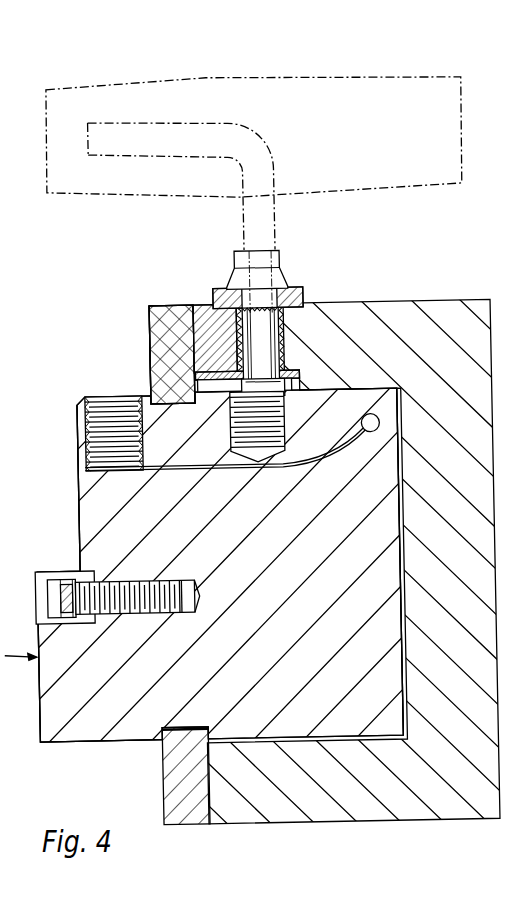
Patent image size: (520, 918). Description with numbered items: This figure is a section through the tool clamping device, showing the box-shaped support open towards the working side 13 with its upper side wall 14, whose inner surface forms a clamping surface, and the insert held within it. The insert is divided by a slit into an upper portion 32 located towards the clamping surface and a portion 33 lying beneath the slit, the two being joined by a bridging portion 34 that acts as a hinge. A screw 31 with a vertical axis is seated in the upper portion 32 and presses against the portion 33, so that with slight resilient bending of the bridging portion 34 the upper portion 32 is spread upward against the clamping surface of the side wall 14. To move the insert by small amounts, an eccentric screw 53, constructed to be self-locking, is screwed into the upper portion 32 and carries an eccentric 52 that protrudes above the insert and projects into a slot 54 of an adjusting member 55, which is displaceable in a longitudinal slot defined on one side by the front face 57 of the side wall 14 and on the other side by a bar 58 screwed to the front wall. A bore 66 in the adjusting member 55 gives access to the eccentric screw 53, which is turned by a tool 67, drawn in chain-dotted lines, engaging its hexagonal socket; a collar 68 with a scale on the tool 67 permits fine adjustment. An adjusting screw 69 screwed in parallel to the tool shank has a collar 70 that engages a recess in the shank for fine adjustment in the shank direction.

The working side 13 is at (53, 350).
The upper side wall 14 is at (374, 349).
The screw 31 is at (118, 577).
The upper portion 32 is at (126, 514).
The portion lying beneath the slit 33 is at (83, 393).
The bridging portion 34 is at (400, 397).
The eccentric 52 is at (180, 305).
The eccentric screw 53 is at (147, 362).
The slot 54 is at (149, 304).
The adjusting member 55 is at (282, 333).
The front face 57 is at (292, 292).
The bar 58 is at (215, 308).
The bore 66 is at (286, 353).
The tool 67 is at (458, 136).
The collar 68 is at (284, 262).
The adjusting screw 69 is at (77, 451).
The collar 70 is at (62, 568).